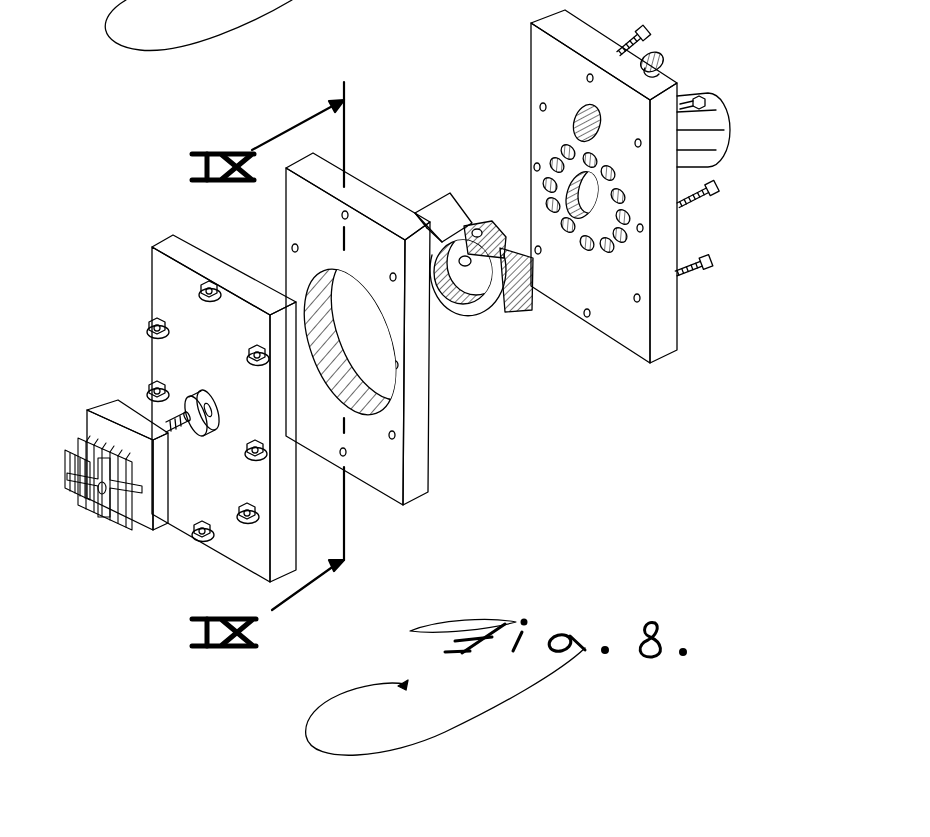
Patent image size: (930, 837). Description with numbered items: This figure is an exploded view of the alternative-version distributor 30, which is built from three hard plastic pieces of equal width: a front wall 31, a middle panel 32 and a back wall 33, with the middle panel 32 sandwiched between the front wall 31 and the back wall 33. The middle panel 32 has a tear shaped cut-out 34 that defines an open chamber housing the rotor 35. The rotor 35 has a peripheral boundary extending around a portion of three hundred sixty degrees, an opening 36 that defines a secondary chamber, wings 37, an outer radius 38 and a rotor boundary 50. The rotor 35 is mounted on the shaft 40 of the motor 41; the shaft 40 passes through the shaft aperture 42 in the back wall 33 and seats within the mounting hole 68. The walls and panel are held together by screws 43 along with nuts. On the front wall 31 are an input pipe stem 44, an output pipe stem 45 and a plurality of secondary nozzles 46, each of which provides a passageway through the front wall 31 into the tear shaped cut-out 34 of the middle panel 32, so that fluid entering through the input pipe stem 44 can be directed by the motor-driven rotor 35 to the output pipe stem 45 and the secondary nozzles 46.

The distributor 30 is at (102, 211).
The front wall 31 is at (668, 348).
The middle panel 32 is at (424, 484).
The back wall 33 is at (184, 232).
The tear shaped cut-out 34 is at (348, 300).
The rotor 35 is at (494, 235).
The opening 36 is at (477, 282).
The wings 37 is at (448, 215).
The outer radius 38 is at (480, 230).
The shaft 40 is at (174, 425).
The motor 41 is at (102, 399).
The shaft aperture 42 is at (213, 405).
The screws 43 is at (648, 33).
The input pipe stem 44 is at (150, 330).
The output pipe stem 45 is at (718, 140).
The secondary nozzles 46 is at (565, 150).
The rotor boundary 50 is at (484, 310).
The mounting hole 68 is at (458, 262).